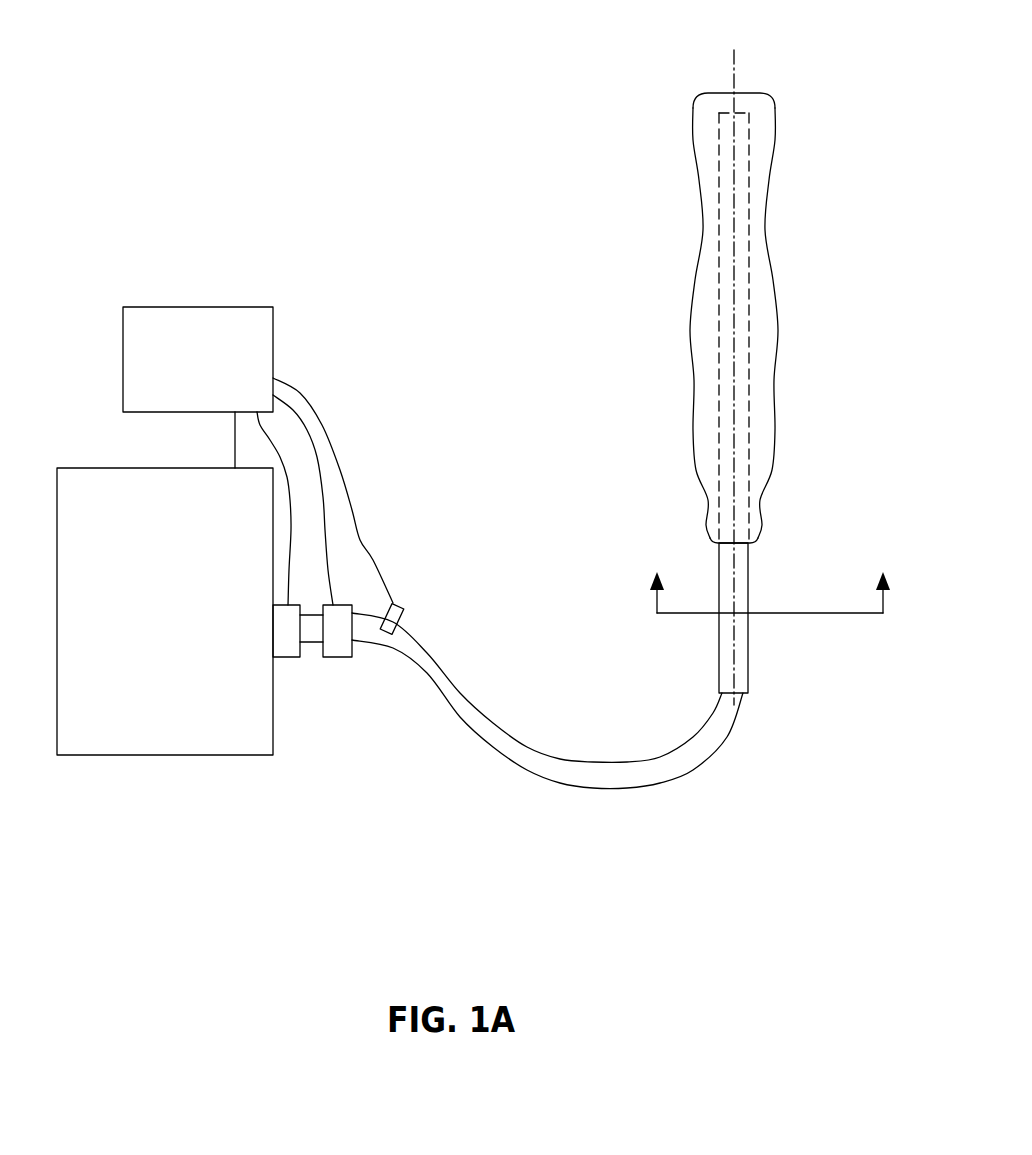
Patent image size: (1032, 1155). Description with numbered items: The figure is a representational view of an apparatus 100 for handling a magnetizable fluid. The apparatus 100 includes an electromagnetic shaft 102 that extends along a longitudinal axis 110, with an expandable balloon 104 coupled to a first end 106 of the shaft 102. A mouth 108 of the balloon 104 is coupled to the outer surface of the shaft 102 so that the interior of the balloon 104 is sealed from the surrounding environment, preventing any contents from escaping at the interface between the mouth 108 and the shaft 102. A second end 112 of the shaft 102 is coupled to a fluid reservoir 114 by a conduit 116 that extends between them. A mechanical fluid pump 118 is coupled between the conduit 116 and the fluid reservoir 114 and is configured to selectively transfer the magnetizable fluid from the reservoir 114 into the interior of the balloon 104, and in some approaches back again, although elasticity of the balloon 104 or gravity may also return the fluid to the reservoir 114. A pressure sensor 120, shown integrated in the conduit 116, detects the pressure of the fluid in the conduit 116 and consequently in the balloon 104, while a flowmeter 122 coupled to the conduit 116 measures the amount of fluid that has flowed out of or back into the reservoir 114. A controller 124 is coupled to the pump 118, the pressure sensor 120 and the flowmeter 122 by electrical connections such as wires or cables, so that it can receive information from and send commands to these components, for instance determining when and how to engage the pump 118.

The apparatus 100 is at (104, 124).
The electromagnetic shaft 102 is at (749, 677).
The expandable balloon 104 is at (777, 342).
The first end 106 is at (618, 286).
The mouth 108 is at (760, 543).
The longitudinal axis 110 is at (734, 66).
The second end 112 is at (665, 684).
The fluid reservoir 114 is at (175, 755).
The conduit 116 is at (640, 789).
The mechanical fluid pump 118 is at (296, 657).
The pressure sensor 120 is at (401, 607).
The flowmeter 122 is at (345, 657).
The controller 124 is at (188, 305).